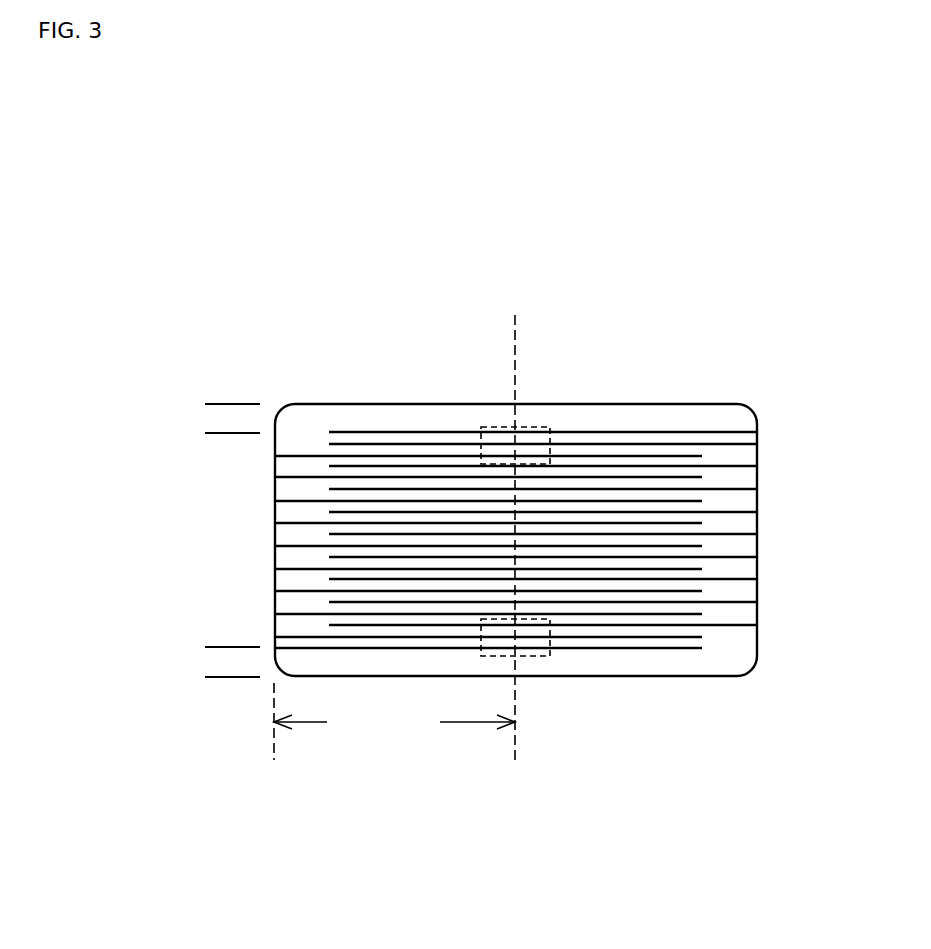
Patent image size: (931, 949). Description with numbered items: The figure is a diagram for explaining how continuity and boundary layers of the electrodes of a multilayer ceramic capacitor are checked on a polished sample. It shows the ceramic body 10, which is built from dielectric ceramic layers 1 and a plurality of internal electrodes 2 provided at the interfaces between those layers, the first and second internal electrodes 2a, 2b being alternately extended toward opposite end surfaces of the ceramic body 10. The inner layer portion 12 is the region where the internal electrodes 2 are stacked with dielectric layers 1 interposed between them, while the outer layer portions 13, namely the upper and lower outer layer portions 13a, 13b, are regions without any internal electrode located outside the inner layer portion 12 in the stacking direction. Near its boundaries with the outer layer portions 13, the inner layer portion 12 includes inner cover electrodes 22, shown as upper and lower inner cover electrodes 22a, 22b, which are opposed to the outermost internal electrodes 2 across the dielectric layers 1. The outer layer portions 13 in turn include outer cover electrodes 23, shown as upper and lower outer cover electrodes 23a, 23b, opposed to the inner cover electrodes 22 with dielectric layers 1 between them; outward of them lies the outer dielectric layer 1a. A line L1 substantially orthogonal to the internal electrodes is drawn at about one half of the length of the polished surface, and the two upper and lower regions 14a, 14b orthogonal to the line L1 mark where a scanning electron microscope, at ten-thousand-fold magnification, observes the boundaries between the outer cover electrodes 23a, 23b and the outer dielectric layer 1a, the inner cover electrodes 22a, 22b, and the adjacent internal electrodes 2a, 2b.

The ceramic body 10 is at (360, 363).
The dielectric ceramic layer 1 is at (531, 538).
The outer dielectric layer 1a is at (355, 422).
The internal electrode 2 is at (574, 465).
The first internal electrode 2a is at (416, 477).
The second internal electrode 2b is at (735, 468).
The inner layer portion 12 is at (197, 437).
The outer layer portion 13 is at (168, 540).
The upper outer layer portion 13a is at (197, 404).
The lower outer layer portion 13b is at (197, 647).
The upper region 14a is at (538, 427).
The lower region 14b is at (537, 656).
The inner cover electrode 22 is at (536, 574).
The upper inner cover electrode 22a is at (670, 444).
The lower inner cover electrode 22b is at (653, 643).
The outer cover electrode 23 is at (516, 538).
The upper outer cover electrode 23a is at (635, 433).
The lower outer cover electrode 23b is at (592, 648).
The line L1 is at (510, 347).